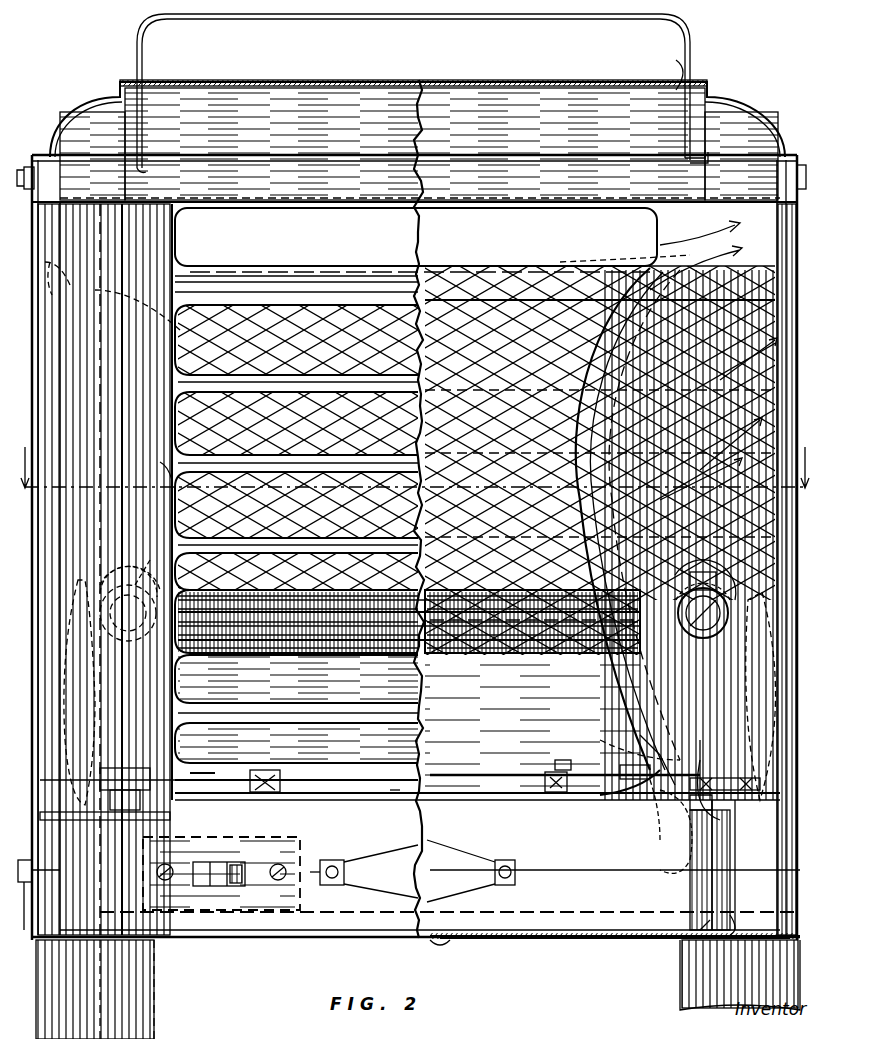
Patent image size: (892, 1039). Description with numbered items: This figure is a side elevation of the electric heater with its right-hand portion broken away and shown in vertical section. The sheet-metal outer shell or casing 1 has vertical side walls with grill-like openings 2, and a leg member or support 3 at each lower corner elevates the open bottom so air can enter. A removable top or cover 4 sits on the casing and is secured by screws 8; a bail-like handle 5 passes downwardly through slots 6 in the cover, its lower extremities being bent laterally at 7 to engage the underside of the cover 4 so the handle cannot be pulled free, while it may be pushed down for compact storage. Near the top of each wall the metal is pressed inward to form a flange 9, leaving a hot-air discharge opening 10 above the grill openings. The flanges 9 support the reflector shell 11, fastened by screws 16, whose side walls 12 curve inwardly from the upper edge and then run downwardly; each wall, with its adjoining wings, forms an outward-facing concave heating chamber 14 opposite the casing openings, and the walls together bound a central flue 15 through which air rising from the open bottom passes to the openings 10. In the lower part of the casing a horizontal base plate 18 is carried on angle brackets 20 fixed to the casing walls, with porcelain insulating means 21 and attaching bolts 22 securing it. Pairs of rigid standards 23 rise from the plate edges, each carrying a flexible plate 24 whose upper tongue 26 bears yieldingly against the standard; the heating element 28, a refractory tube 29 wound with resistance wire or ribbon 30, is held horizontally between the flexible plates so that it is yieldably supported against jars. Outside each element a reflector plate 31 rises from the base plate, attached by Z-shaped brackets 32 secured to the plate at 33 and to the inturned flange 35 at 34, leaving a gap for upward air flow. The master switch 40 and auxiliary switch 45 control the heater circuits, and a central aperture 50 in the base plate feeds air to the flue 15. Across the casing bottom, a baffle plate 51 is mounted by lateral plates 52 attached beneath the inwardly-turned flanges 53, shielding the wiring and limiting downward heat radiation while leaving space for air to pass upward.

The outer shell or casing 1 is at (157, 465).
The grill-like openings 2 is at (178, 418).
The leg member or support 3 is at (695, 963).
The top or cover 4 is at (748, 110).
The bail-like handle 5 is at (137, 64).
The slots 6 is at (671, 68).
The laterally bent lower extremities 7 is at (690, 166).
The screws 8 is at (26, 168).
The laterally inwardly projecting flange 9 is at (528, 268).
The hot-air discharge opening 10 is at (436, 258).
The reflector shell 11 is at (576, 280).
The side walls of reflector shell 12 is at (510, 735).
The concave heating chamber 14 is at (160, 520).
The central flue 15 is at (476, 528).
The screws 16 is at (696, 253).
The base or frame plate 18 is at (565, 775).
The angle brackets 20 is at (790, 842).
The porcelain insulating means 21 is at (371, 809).
The attaching bolts 22 is at (104, 862).
The standards 23 is at (738, 680).
The flexible plate 24 is at (740, 560).
The tongue 26 is at (118, 585).
The electrical heating element 28 is at (112, 622).
The refractory tube 29 is at (125, 640).
The electrical resistance wire or ribbon 30 is at (318, 652).
The reflector plate 31 is at (740, 715).
The Z-shaped brackets 32 is at (740, 758).
The attachment of bracket upper arm 33 is at (255, 793).
The attachment of bracket lower arm 34 is at (252, 795).
The laterally inwardly turned flange 35 is at (650, 782).
The master control switch 40 is at (24, 860).
The auxiliary switch 45 is at (250, 896).
The central aperture 50 is at (425, 802).
The baffle plate 51 is at (558, 940).
The lateral plates 52 is at (752, 928).
The inwardly-turned flanges 53 is at (741, 865).